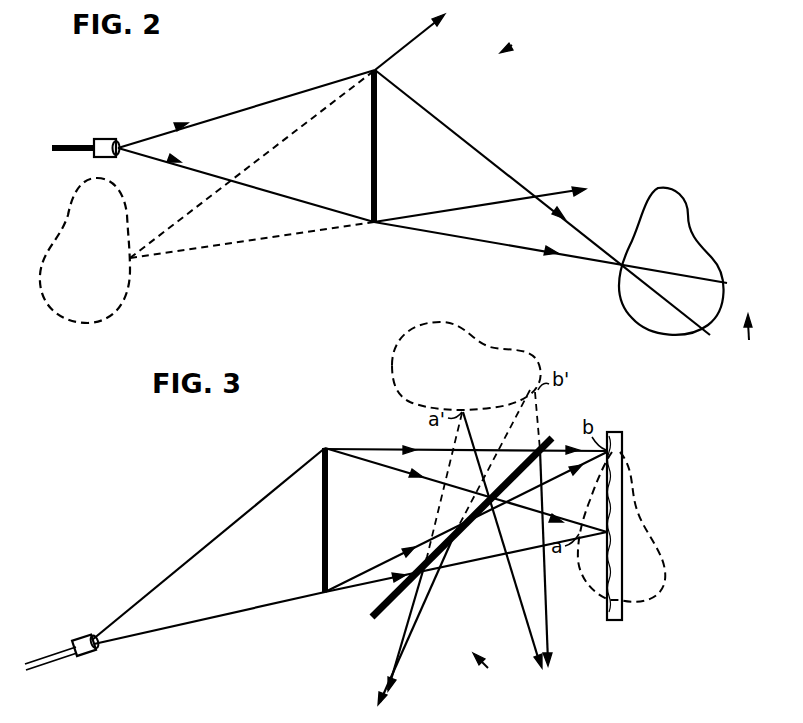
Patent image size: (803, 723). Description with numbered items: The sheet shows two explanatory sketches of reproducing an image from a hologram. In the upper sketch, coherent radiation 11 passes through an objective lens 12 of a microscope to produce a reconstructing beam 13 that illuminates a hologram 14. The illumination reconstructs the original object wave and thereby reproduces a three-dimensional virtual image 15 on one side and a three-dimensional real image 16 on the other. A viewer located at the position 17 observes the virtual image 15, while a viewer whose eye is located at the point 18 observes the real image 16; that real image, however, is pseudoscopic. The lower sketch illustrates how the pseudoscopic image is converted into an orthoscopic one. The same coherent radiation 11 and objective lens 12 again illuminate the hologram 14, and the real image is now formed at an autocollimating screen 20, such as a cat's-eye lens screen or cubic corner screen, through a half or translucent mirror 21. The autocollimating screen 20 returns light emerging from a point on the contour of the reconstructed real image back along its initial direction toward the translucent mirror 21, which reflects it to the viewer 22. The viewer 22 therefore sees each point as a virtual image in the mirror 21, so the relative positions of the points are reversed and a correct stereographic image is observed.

In FIG. 2, the coherent radiation 11 is at (68, 139).
In FIG. 3, the coherent radiation 11 is at (50, 667).
In FIG. 2, the objective lens 12 is at (105, 138).
In FIG. 3, the objective lens 12 is at (84, 636).
In FIG. 2, the light beam 13 is at (190, 132).
In FIG. 2, the hologram 14 is at (371, 183).
In FIG. 3, the hologram 14 is at (322, 565).
In FIG. 2, the three-dimensional virtual image 15 is at (134, 298).
In FIG. 2, the three-dimensional real image 16 is at (618, 302).
In FIG. 2, the viewing position 17 is at (512, 45).
In FIG. 2, the viewer's eye point 18 is at (749, 340).
In FIG. 3, the autocollimating screen 20 is at (624, 441).
In FIG. 3, the translucent mirror 21 is at (550, 435).
In FIG. 3, the viewer 22 is at (497, 679).